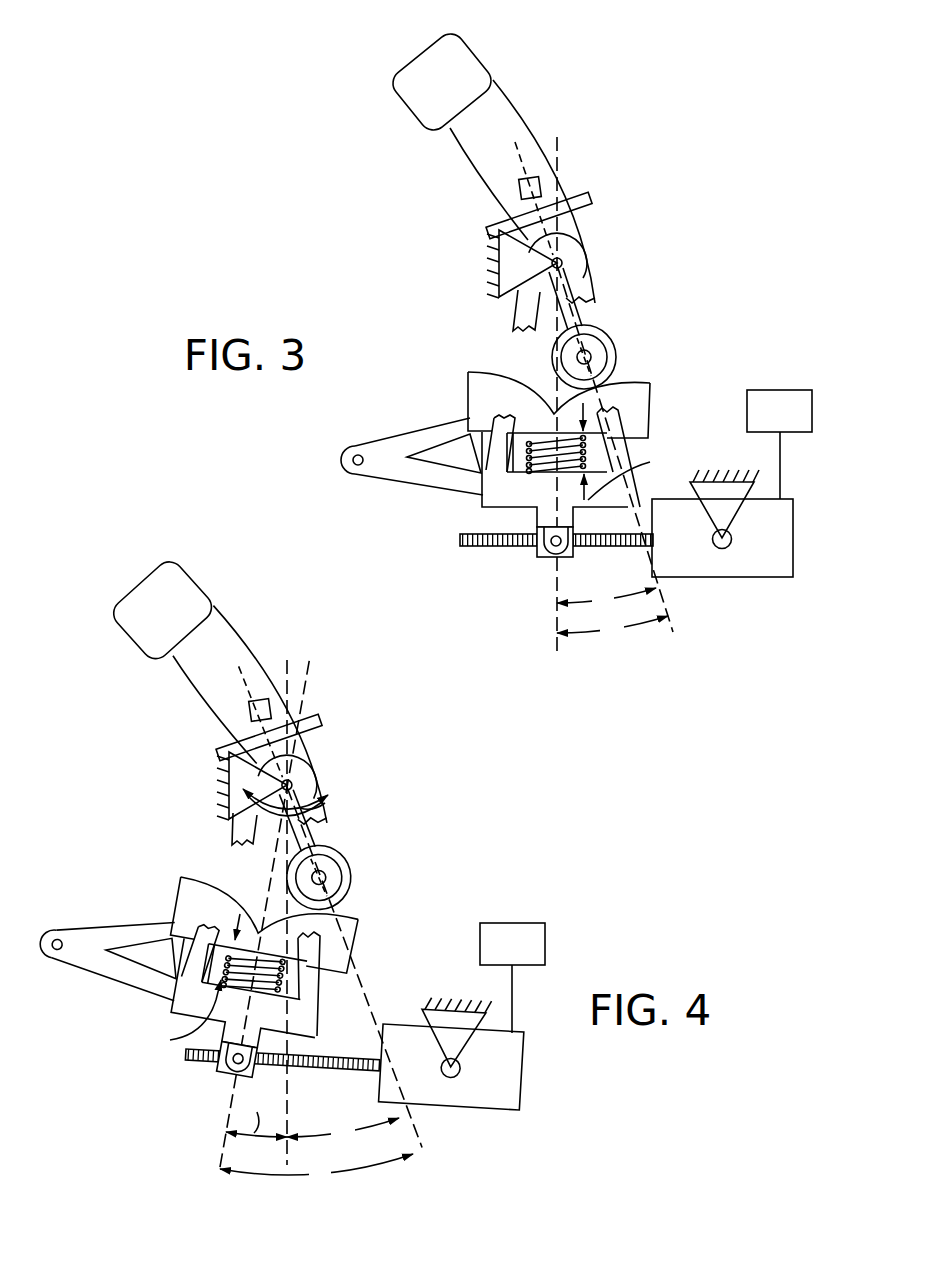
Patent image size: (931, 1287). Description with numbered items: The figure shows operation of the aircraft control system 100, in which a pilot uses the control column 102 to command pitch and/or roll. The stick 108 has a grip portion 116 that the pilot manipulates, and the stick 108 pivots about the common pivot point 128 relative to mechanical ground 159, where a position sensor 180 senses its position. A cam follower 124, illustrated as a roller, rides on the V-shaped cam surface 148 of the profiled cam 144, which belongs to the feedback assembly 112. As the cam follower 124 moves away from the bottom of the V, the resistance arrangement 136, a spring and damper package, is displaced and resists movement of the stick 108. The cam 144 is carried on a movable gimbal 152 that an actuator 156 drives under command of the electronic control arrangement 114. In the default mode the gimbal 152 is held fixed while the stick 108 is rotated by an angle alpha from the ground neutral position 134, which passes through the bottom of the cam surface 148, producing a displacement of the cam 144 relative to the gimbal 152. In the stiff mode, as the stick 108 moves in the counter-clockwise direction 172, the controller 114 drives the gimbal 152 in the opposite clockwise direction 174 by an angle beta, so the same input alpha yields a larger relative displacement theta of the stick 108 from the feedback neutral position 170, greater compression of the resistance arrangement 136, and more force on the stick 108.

In FIG. 3, the aircraft control system 100 is at (722, 170).
In FIG. 4, the aircraft control system 100 is at (363, 682).
In FIG. 3, the control column 102 is at (376, 148).
In FIG. 4, the control column 102 is at (112, 750).
In FIG. 3, the stick 108 is at (537, 42).
In FIG. 4, the stick 108 is at (220, 558).
In FIG. 3, the feedback assembly 112 is at (657, 346).
In FIG. 4, the feedback assembly 112 is at (398, 796).
In FIG. 3, the electronic control arrangement 114 is at (796, 390).
In FIG. 4, the electronic control arrangement 114 is at (532, 922).
In FIG. 3, the grip portion 116 is at (513, 120).
In FIG. 4, the grip portion 116 is at (225, 638).
In FIG. 3, the cam follower 124 is at (612, 345).
In FIG. 4, the cam follower 124 is at (352, 883).
In FIG. 3, the common pivot point 128 is at (566, 261).
In FIG. 3, the ground neutral position 134 is at (553, 570).
In FIG. 4, the ground neutral position 134 is at (288, 1103).
In FIG. 3, the resistance arrangement 136 is at (666, 428).
In FIG. 4, the resistance arrangement 136 is at (365, 974).
In FIG. 3, the profiled cam 144 is at (478, 393).
In FIG. 4, the profiled cam 144 is at (186, 902).
In FIG. 3, the V-shaped cam surface 148 is at (508, 372).
In FIG. 4, the V-shaped cam surface 148 is at (203, 879).
In FIG. 3, the movable gimbal 152 is at (490, 453).
In FIG. 4, the movable gimbal 152 is at (178, 1005).
In FIG. 3, the actuator 156 is at (768, 572).
In FIG. 4, the actuator 156 is at (490, 1098).
In FIG. 3, the mechanical ground 159 is at (500, 265).
In FIG. 4, the mechanical ground 159 is at (236, 776).
In FIG. 4, the feedback neutral position 170 is at (262, 888).
In FIG. 4, the counter-clockwise direction 172 is at (308, 790).
In FIG. 4, the clockwise direction 174 is at (327, 806).
In FIG. 3, the position sensor 180 is at (512, 199).
In FIG. 4, the position sensor 180 is at (244, 718).